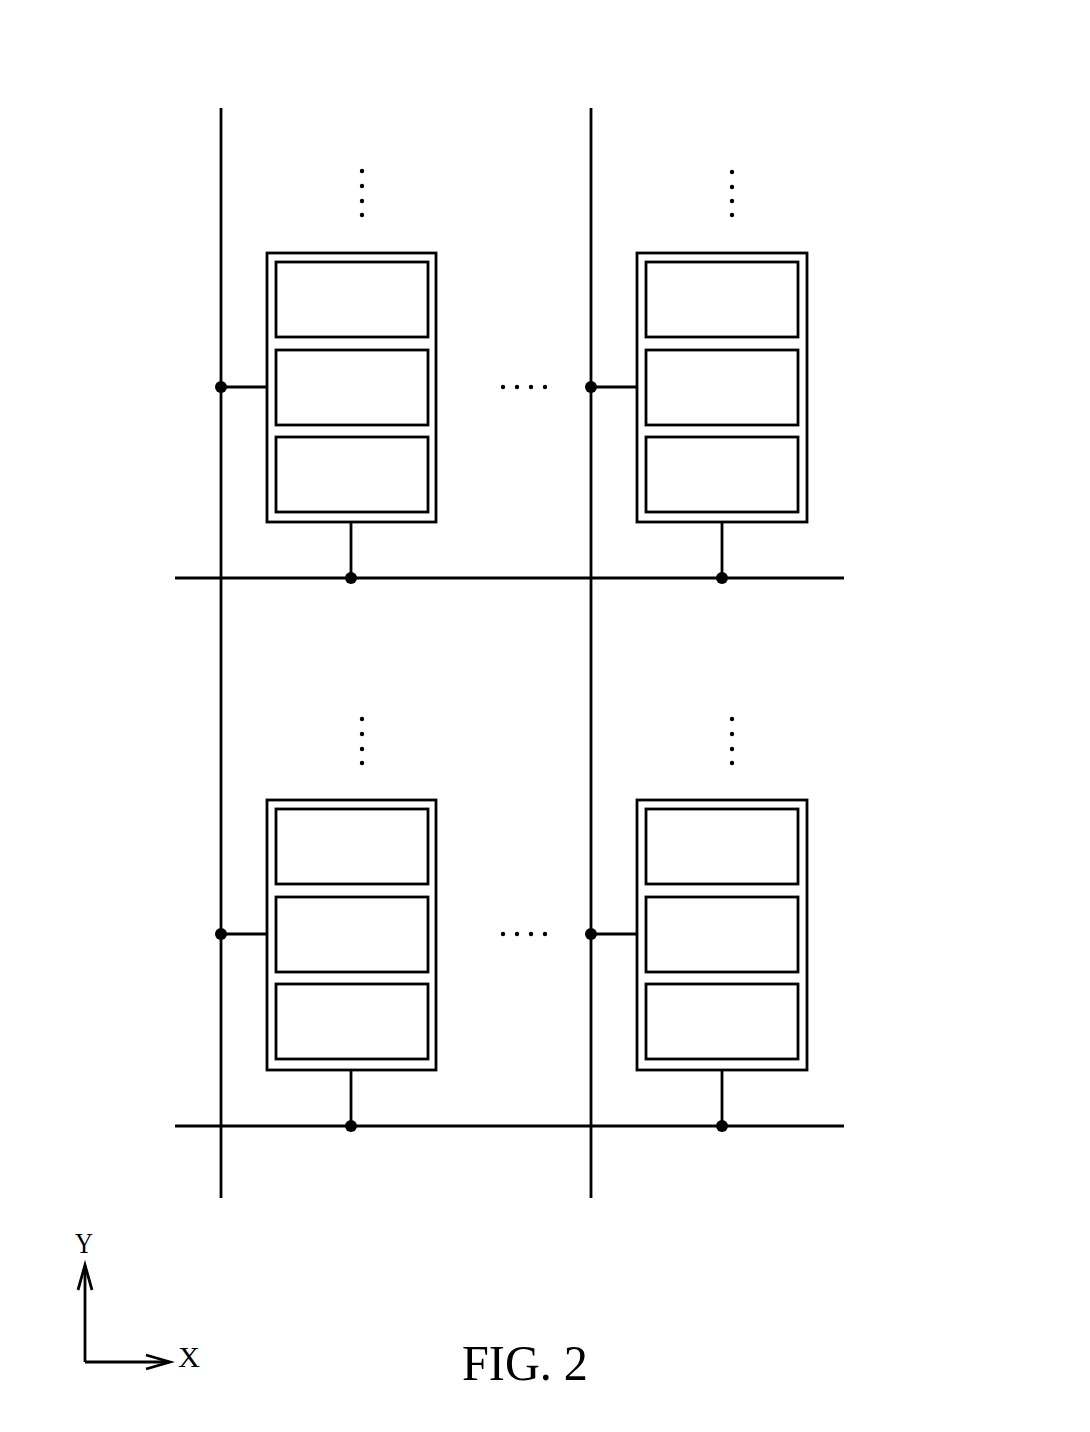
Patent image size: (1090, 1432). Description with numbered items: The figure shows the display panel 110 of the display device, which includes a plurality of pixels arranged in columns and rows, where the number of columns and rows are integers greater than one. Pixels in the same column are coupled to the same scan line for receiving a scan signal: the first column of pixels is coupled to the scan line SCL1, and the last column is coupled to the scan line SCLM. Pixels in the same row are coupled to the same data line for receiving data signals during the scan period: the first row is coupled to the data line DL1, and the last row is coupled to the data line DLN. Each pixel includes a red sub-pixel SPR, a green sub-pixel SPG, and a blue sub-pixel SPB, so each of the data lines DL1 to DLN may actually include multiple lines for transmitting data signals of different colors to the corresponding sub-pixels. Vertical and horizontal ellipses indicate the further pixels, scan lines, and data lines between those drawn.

The display panel 110 is at (800, 72).
The scan line SCL1 is at (230, 673).
The scan line SCLM is at (595, 673).
The data line DLN is at (206, 591).
The data line DL1 is at (206, 1139).
The blue sub-pixel SPB is at (537, 573).
The green sub-pixel SPG is at (537, 661).
The red sub-pixel SPR is at (537, 748).